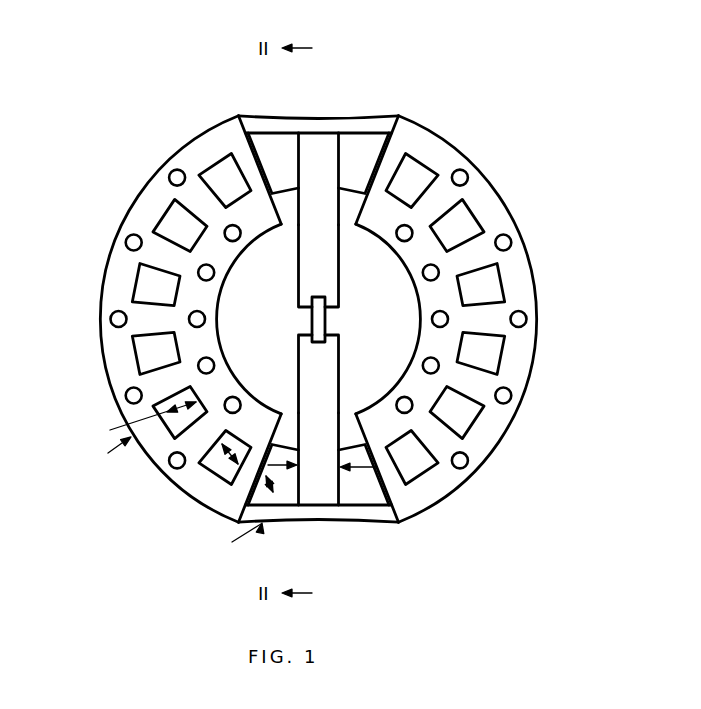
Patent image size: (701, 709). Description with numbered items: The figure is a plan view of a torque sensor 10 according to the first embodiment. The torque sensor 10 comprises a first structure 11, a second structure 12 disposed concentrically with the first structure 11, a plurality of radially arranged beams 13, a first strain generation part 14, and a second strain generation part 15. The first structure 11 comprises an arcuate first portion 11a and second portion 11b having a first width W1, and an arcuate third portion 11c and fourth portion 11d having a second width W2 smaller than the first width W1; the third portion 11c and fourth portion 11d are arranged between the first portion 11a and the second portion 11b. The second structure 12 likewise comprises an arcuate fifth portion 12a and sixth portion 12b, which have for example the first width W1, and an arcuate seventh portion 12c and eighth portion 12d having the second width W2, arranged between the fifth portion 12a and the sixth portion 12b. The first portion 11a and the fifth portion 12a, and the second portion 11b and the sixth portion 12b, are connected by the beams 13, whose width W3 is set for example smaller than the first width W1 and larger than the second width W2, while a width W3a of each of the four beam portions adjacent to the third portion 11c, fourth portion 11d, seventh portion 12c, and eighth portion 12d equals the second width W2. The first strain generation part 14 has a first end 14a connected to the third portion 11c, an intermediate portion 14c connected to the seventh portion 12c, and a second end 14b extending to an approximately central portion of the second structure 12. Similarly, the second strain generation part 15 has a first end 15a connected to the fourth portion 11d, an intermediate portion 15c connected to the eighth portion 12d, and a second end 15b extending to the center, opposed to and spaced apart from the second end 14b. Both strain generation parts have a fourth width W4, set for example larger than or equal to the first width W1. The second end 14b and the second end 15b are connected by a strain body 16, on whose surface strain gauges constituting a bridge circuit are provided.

The torque sensor 10 is at (188, 112).
The first structure 11 is at (152, 213).
The first portion 11a is at (149, 179).
The second portion 11b is at (478, 172).
The third portion 11c is at (282, 131).
The fourth portion 11d is at (268, 521).
The second structure 12 is at (195, 285).
The fifth portion 12a is at (183, 313).
The sixth portion 12b is at (450, 295).
The seventh portion 12c is at (277, 198).
The eighth portion 12d is at (277, 441).
The beams 13 is at (160, 386).
The first strain generation part 14 is at (338, 158).
The first end 14a is at (326, 133).
The second end 14b is at (322, 272).
The intermediate portion 14c is at (320, 197).
The second strain generation part 15 is at (342, 502).
The first end 15a is at (321, 512).
The second end 15b is at (327, 356).
The intermediate portion 15c is at (335, 441).
The strain body 16 is at (320, 325).
The first width W1 is at (110, 430).
The second width W2 is at (233, 541).
The width of the beams W3 is at (222, 444).
The width of beam portions adjacent to narrow portions W3a is at (266, 486).
The fourth width W4 is at (352, 470).